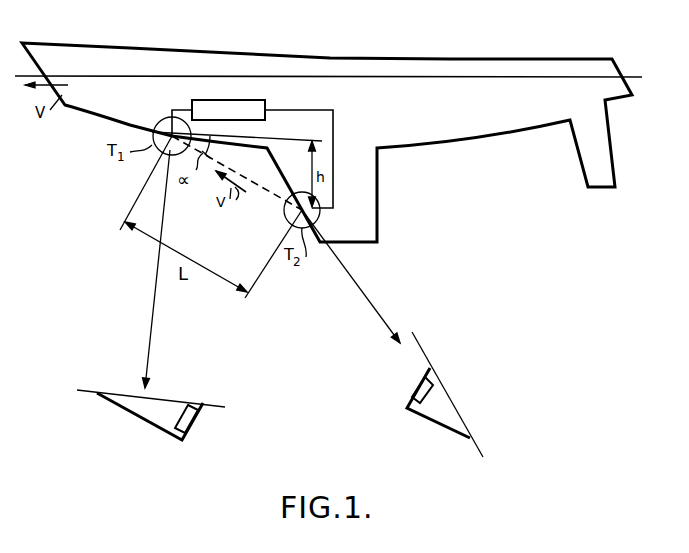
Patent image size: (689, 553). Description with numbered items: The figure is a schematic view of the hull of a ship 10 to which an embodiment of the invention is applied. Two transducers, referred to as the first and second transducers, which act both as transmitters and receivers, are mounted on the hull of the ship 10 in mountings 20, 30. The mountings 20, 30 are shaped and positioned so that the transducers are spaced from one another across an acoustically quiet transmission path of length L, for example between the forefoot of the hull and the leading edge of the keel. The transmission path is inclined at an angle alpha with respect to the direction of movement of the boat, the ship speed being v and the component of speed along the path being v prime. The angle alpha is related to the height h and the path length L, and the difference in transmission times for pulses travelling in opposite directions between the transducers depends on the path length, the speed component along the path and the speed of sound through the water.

The hull of a ship 10 is at (344, 62).
The mounting 20 is at (158, 413).
The mounting 30 is at (443, 408).